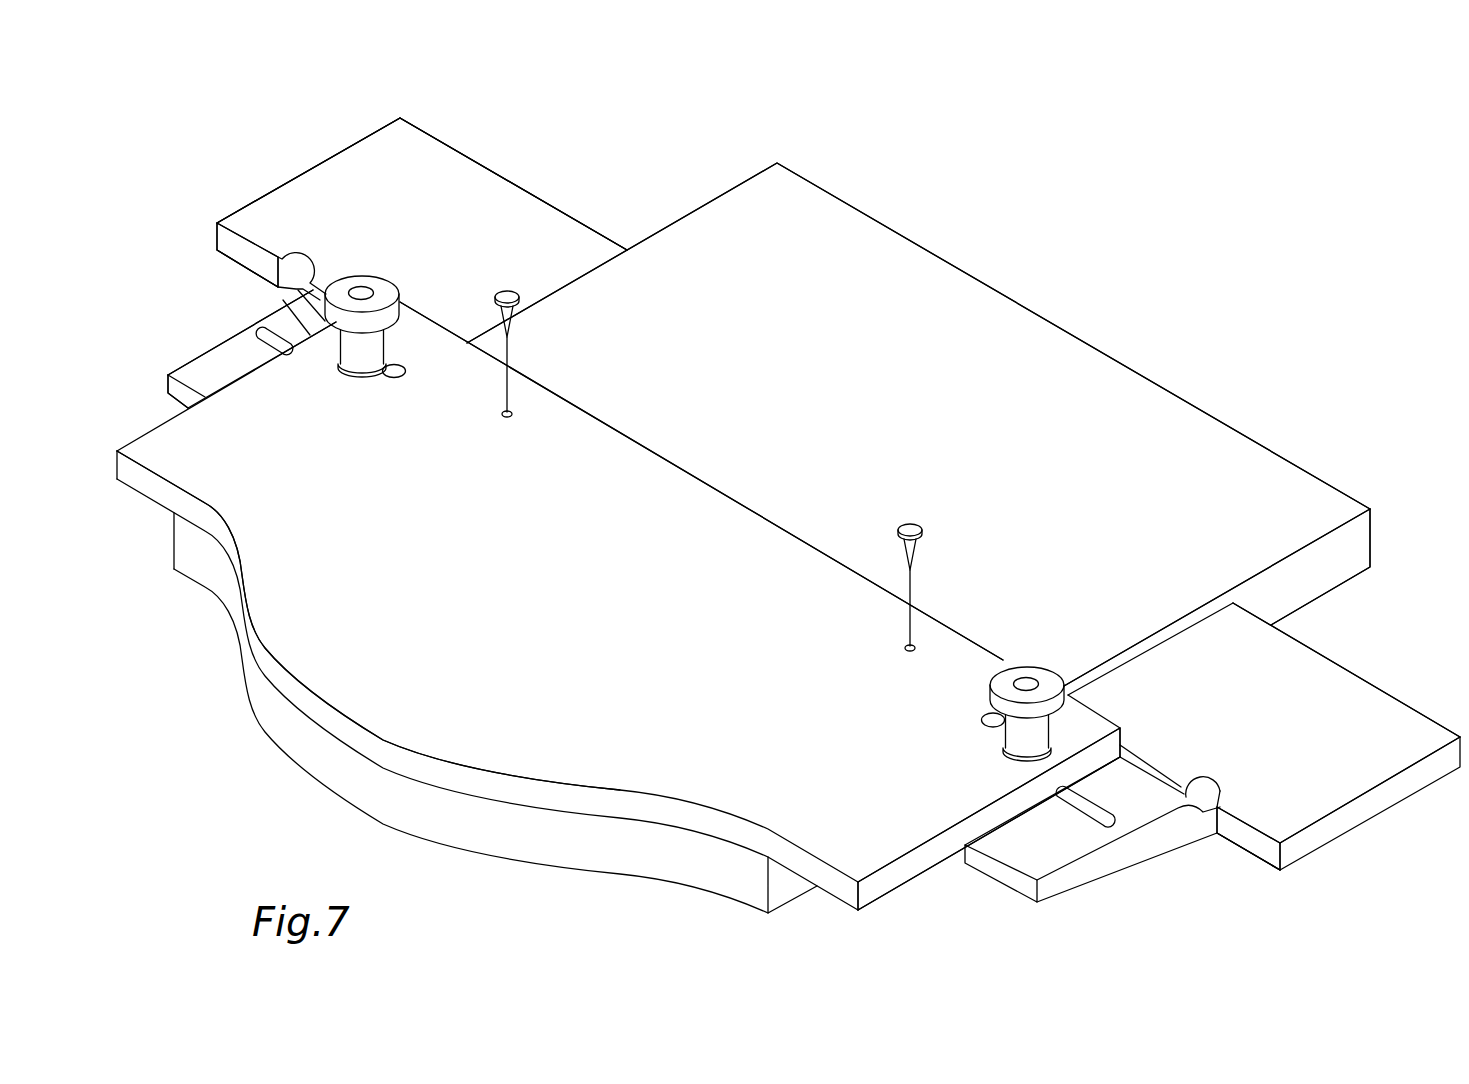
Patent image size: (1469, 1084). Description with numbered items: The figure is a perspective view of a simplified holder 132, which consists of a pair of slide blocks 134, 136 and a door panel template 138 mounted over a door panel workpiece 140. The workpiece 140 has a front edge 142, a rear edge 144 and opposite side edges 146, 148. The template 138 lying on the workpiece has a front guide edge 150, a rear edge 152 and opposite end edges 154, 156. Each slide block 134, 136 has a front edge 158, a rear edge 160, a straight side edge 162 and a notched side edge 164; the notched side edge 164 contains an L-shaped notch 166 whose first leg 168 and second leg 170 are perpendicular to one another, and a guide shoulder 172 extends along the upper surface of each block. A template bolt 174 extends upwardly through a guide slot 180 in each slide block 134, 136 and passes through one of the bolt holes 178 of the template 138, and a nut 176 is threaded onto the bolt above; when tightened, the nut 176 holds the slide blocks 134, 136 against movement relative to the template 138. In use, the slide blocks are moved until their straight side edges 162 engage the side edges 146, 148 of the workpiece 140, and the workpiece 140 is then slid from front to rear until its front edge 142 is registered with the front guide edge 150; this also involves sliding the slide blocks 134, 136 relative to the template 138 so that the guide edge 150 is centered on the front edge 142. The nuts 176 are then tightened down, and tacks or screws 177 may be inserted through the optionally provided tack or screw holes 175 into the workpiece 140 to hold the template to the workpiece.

The holder 132 is at (318, 142).
The slide block 134 is at (253, 198).
The slide block 136 is at (1349, 663).
The door panel template 138 is at (578, 403).
The door panel workpiece 140 is at (174, 543).
The front edge 142 is at (295, 738).
The rear edge 144 is at (1074, 331).
The side edge 146 is at (727, 192).
The side edge 148 is at (1338, 570).
The front guide edge 150 is at (280, 676).
The rear edge 152 is at (672, 467).
The end edge 154 is at (282, 301).
The end edge 156 is at (897, 882).
The front edge 158 is at (183, 398).
The rear edge 160 is at (533, 196).
The straight side edge 162 is at (1207, 620).
The notched side edge 164 is at (304, 169).
The L-shaped notch 166 is at (236, 251).
The first leg 168 is at (247, 262).
The second leg 170 is at (213, 362).
The guide shoulder 172 is at (302, 258).
The template bolt 174 is at (365, 291).
The tack or screw hole 175 is at (503, 412).
The nut 176 is at (386, 289).
The tack or screw 177 is at (507, 296).
The bolt hole 178 is at (395, 378).
The guide slot 180 is at (263, 335).